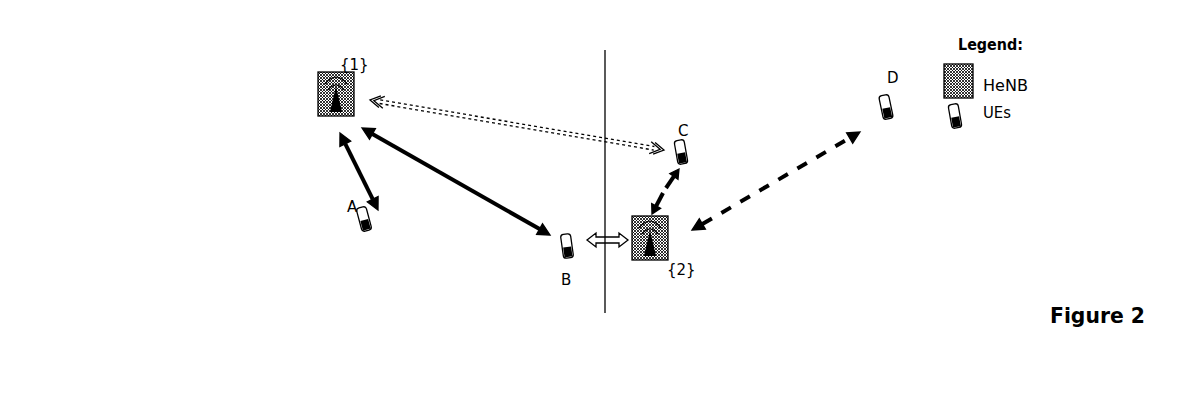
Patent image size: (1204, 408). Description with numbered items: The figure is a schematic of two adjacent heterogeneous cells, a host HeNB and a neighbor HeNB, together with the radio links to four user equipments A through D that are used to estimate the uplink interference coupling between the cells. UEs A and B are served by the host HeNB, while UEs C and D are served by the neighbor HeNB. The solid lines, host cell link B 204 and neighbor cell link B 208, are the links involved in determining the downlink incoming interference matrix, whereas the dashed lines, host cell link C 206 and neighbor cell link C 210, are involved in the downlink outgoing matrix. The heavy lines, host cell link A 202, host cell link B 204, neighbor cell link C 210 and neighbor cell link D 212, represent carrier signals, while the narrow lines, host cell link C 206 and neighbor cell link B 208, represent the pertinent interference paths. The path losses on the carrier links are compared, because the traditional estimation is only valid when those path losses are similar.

The host cell link A 202 is at (348, 179).
The host cell link B 204 is at (477, 214).
The host cell link C 206 is at (541, 118).
The neighbor cell link B 208 is at (614, 262).
The neighbor cell link C 210 is at (688, 173).
The neighbor cell link D 212 is at (835, 176).